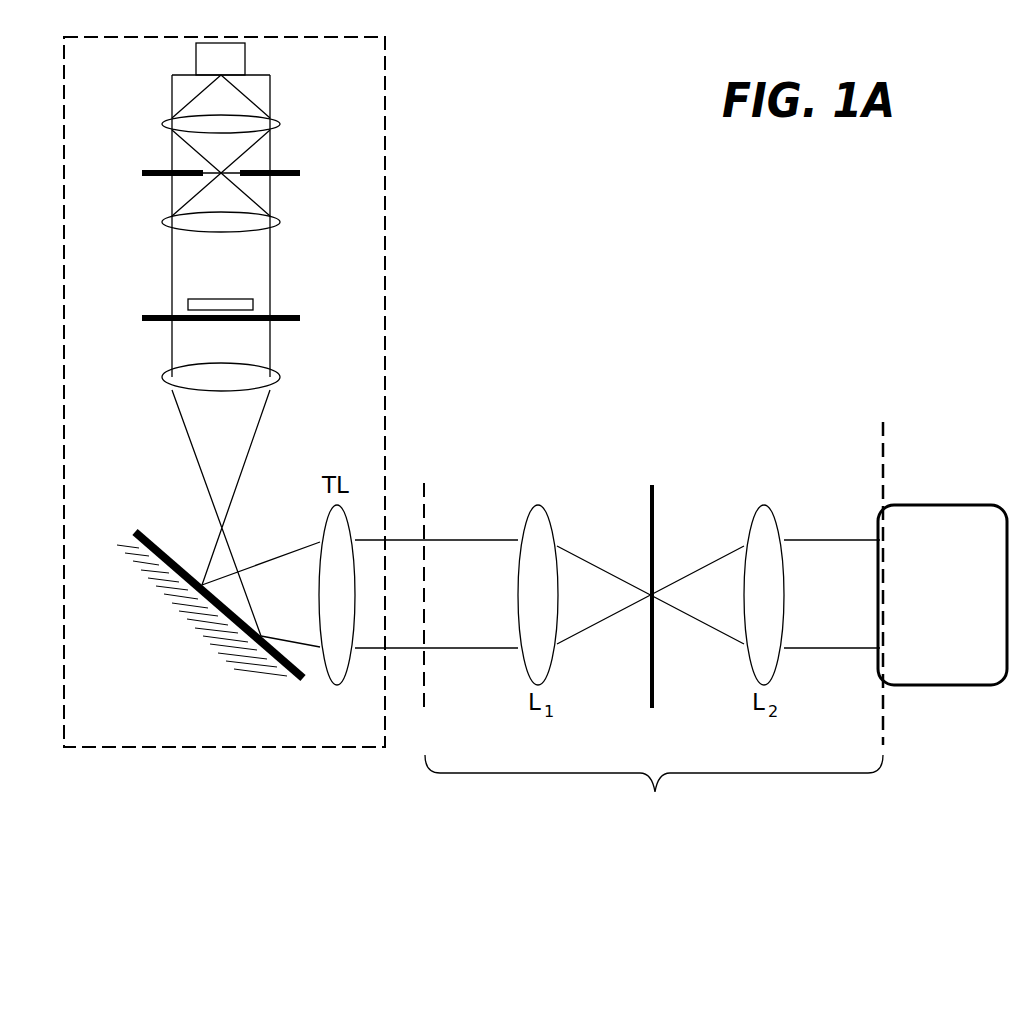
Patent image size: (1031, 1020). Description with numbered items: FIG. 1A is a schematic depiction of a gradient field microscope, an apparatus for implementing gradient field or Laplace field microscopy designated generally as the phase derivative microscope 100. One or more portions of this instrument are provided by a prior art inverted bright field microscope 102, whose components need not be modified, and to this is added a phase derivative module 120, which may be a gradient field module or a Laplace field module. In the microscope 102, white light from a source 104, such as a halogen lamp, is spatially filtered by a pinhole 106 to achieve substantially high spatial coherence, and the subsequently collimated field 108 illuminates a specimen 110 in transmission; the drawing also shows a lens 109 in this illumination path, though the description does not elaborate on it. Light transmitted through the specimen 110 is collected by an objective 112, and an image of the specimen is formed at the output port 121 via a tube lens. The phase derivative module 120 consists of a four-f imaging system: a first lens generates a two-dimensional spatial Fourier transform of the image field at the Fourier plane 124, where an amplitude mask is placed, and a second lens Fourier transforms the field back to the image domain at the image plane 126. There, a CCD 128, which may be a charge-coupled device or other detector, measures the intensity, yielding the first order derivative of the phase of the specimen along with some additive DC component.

The phase derivative microscope 100 is at (503, 799).
The inverted bright field microscope 102 is at (368, 71).
The source 104 is at (205, 55).
The pinhole 106 is at (157, 169).
The collimated field 108 is at (218, 262).
The lens 109 is at (170, 223).
The specimen 110 is at (200, 306).
The objective 112 is at (177, 378).
The phase derivative module 120 is at (654, 788).
The output port 121 is at (427, 495).
The Fourier plane 124 is at (654, 495).
The image plane 126 is at (884, 452).
The CCD 128 is at (963, 642).